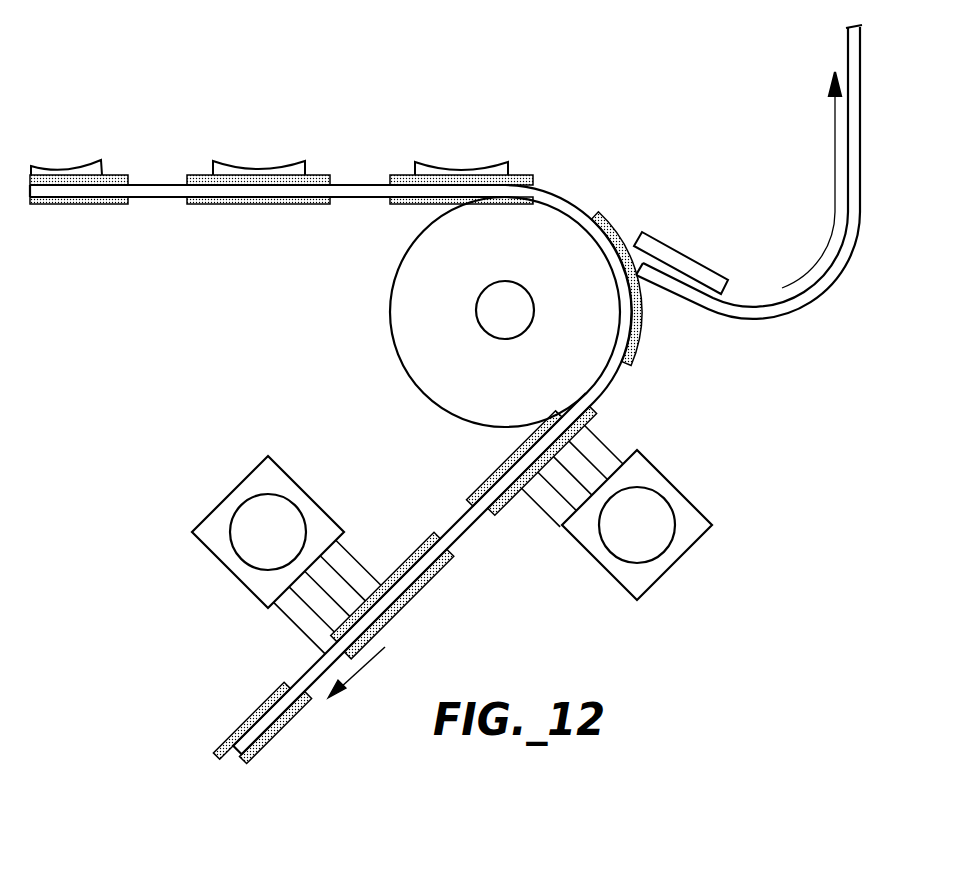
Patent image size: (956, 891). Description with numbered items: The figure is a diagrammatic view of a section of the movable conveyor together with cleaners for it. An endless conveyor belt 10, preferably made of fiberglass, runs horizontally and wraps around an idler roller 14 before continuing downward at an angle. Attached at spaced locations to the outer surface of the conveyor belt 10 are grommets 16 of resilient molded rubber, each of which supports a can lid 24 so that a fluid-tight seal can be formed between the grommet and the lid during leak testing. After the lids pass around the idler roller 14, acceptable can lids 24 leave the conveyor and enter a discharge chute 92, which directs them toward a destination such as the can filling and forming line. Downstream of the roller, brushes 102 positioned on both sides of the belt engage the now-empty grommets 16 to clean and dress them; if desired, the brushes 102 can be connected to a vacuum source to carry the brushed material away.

The conveyor belt 10 is at (150, 199).
The idler roller 14 is at (409, 374).
The grommet 16 is at (317, 168).
The can lid 24 is at (216, 164).
The discharge chute 92 is at (766, 306).
The brush 102 is at (262, 490).